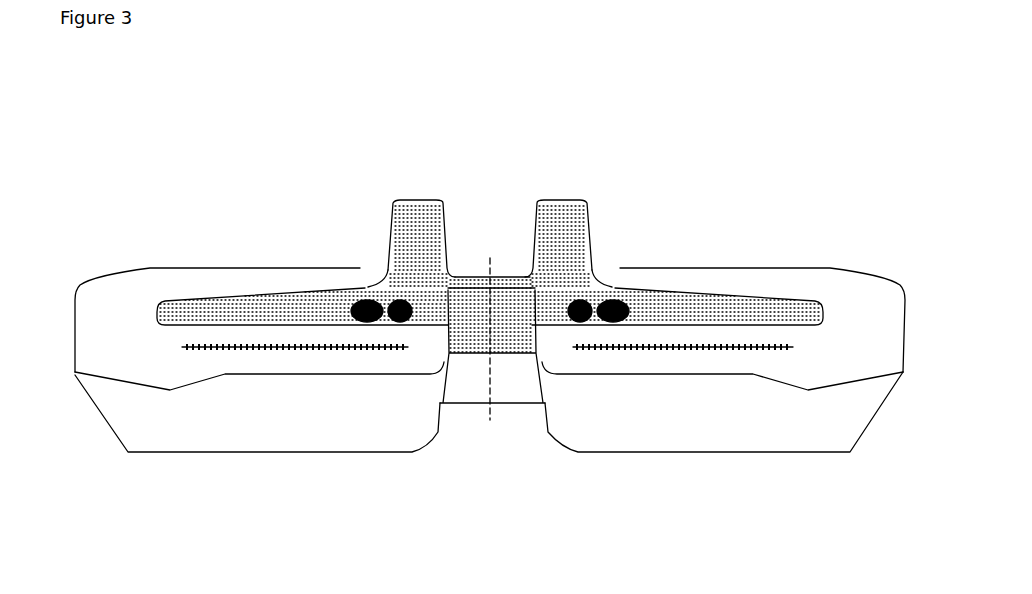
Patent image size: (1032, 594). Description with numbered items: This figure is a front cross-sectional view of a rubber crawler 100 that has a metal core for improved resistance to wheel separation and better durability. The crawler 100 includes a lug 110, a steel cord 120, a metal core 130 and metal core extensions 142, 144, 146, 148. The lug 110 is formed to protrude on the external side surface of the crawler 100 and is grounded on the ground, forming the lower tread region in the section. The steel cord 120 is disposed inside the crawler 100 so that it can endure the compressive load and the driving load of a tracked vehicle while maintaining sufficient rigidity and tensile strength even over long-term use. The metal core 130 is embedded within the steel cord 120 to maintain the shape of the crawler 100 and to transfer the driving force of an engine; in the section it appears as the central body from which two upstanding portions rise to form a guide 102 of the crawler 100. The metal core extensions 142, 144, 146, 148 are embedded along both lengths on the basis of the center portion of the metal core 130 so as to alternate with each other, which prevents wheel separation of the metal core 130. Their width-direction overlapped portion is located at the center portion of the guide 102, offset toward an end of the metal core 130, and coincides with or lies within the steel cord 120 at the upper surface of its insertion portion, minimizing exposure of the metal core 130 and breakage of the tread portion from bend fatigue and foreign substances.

The rubber crawler 100 is at (147, 267).
The guide 102 is at (568, 217).
The lug 110 is at (788, 432).
The steel cord 120 is at (670, 340).
The metal core 130 is at (458, 348).
The metal core extension 142 is at (357, 318).
The metal core extension 144 is at (403, 300).
The metal core extension 146 is at (613, 300).
The metal core extension 148 is at (575, 320).